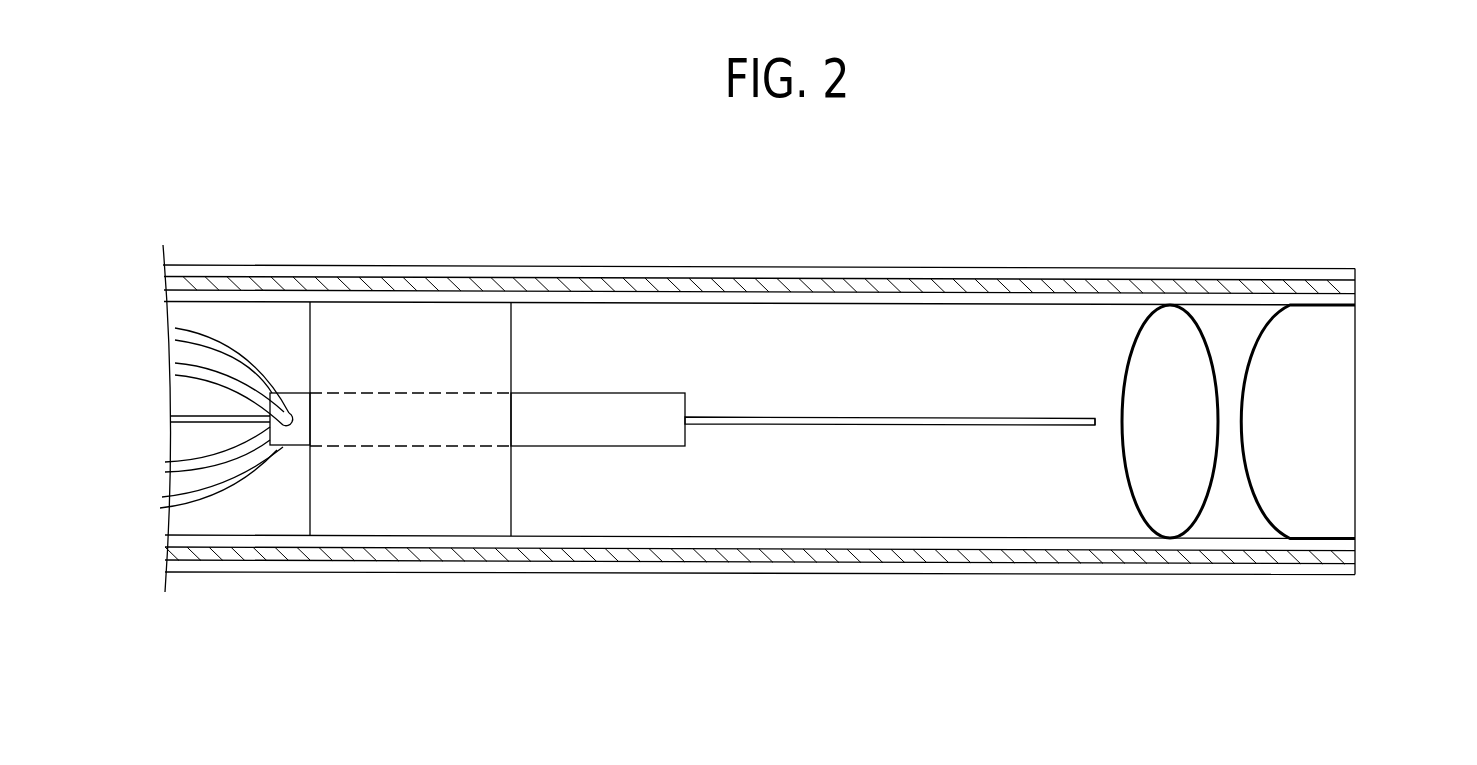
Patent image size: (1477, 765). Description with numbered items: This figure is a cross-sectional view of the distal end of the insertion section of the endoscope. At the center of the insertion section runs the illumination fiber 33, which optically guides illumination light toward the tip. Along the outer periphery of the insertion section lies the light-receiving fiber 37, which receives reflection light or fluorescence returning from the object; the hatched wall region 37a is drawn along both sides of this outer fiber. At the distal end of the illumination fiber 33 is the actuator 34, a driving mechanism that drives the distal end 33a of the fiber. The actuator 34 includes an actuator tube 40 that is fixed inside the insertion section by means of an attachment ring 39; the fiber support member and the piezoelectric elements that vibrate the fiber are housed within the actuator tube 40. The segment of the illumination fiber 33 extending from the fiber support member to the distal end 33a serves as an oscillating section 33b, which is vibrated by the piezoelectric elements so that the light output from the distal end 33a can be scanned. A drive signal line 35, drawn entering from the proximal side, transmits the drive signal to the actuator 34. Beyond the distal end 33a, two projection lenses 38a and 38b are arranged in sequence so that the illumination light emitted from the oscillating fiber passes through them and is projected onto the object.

The illumination fiber 33 is at (198, 417).
The distal end of illumination fiber 33a is at (1098, 423).
The oscillating section 33b is at (970, 418).
The actuator 34 is at (580, 345).
The drive signal line 35 is at (246, 350).
The light-receiving fiber 37 is at (787, 288).
The tube wall 37a is at (1350, 286).
The projection lens 38a is at (1157, 488).
The projection lens 38b is at (1330, 488).
The attachment ring 39 is at (405, 330).
The actuator tube 40 is at (625, 437).